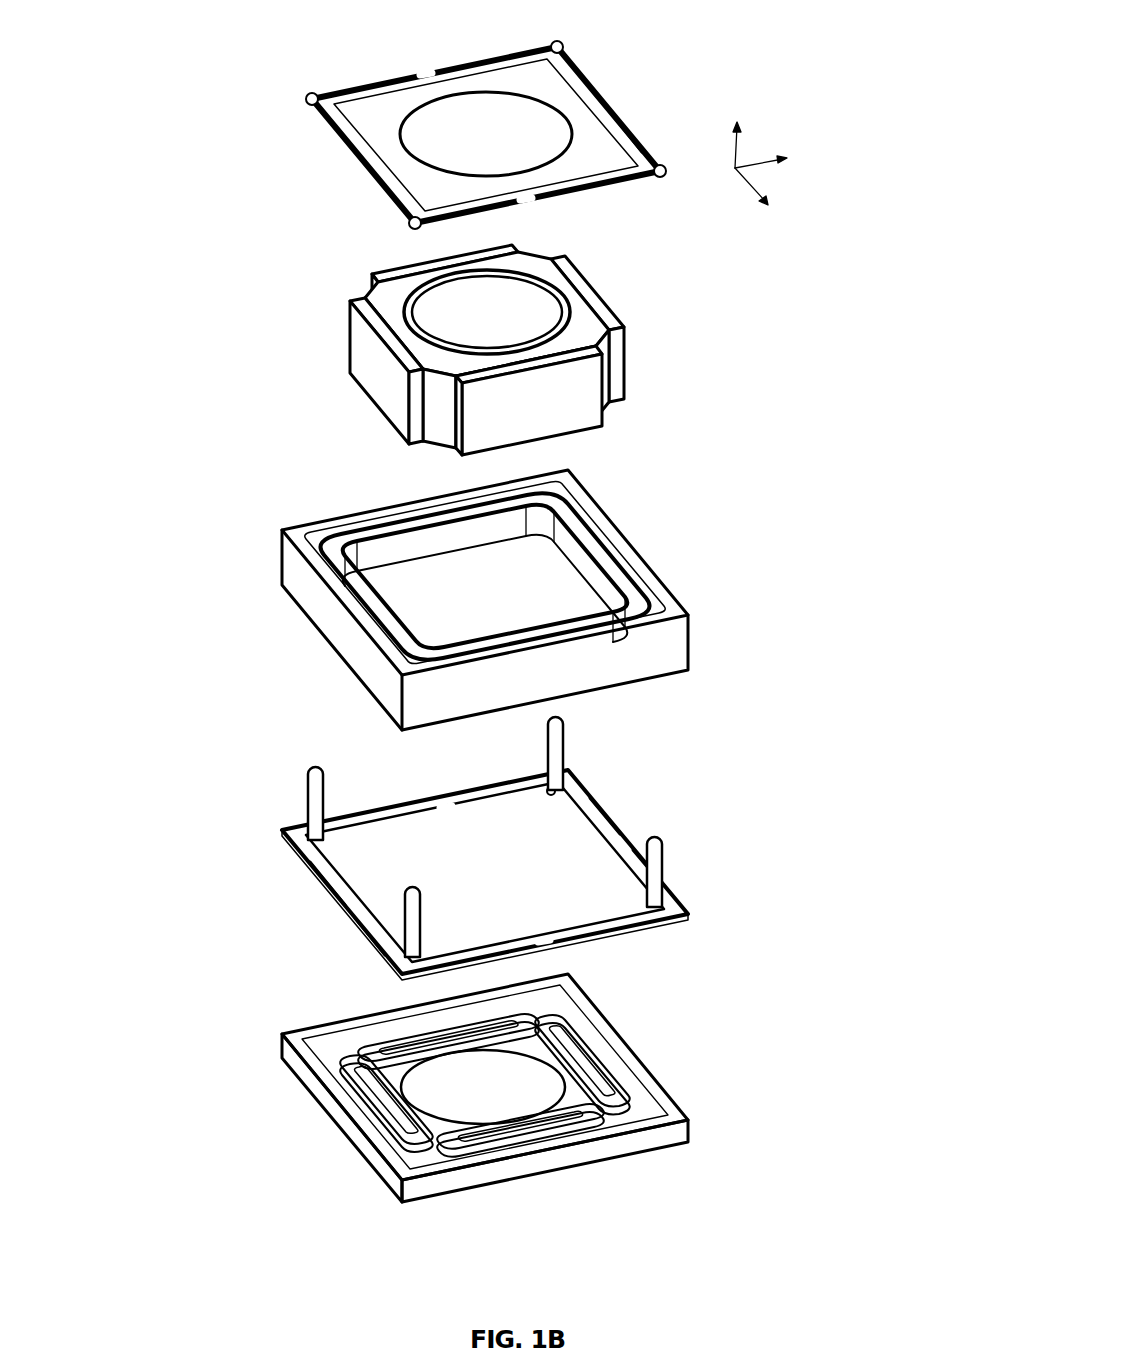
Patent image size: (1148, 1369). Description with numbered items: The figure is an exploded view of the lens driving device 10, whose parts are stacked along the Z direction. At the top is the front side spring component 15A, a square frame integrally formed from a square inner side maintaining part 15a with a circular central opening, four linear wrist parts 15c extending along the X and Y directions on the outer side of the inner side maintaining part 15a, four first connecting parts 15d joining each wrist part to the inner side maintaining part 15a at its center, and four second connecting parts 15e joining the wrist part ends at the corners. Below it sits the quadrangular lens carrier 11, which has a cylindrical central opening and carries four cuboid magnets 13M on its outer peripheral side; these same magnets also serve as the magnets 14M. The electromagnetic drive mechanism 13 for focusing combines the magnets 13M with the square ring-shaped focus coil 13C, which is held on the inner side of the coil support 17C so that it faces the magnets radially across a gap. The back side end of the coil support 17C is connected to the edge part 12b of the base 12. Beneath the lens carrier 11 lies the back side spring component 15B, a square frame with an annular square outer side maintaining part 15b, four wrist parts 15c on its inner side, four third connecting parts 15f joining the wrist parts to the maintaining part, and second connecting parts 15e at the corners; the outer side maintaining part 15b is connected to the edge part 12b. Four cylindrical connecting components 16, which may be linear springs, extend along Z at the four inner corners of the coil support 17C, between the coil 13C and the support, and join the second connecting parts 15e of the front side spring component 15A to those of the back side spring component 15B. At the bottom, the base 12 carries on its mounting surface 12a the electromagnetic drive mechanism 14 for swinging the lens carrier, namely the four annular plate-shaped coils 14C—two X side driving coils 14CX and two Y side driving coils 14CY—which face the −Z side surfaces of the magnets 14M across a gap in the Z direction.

The lens driving device 10 is at (485, 641).
The lens carrier 11 is at (574, 345).
The base 12 is at (484, 1103).
The mounting surface 12a is at (410, 1158).
The edge part 12b is at (423, 1177).
The electromagnetic drive mechanism 13 is at (664, 329).
The magnets 13M is at (592, 310).
The focus coil 13C is at (490, 525).
The electromagnetic drive mechanism 14 is at (627, 400).
The magnets 14M is at (613, 363).
The coils 14C is at (484, 1103).
The X side driving coils 14CX is at (397, 1010).
The Y side driving coils 14CY is at (347, 1080).
The front side spring component 15A is at (593, 148).
The back side spring component 15B is at (485, 823).
The inner side maintaining part 15a is at (567, 56).
The outer side maintaining part 15b is at (615, 827).
The wrist parts 15c is at (585, 88).
The first connecting parts 15d is at (357, 158).
The second connecting parts 15e is at (305, 105).
The third connecting parts 15f is at (580, 843).
The connecting components 16 is at (305, 800).
The coil support 17C is at (535, 597).